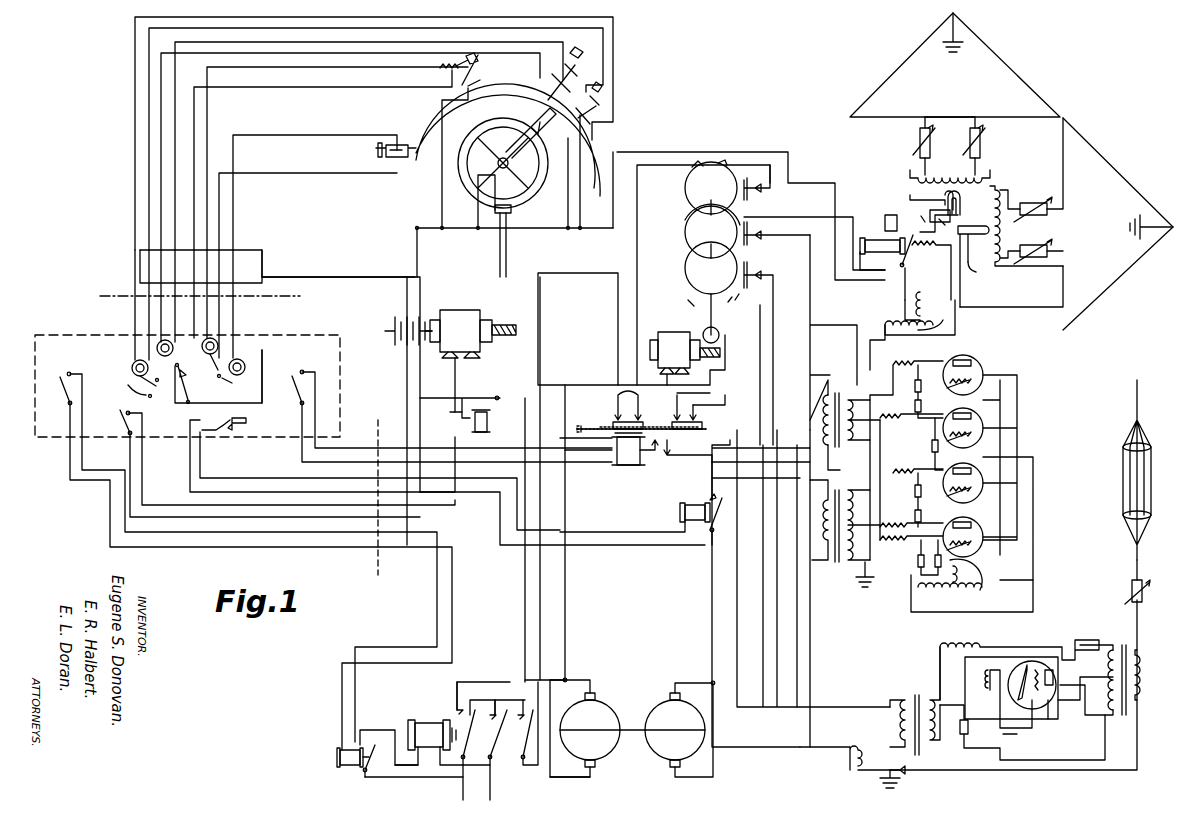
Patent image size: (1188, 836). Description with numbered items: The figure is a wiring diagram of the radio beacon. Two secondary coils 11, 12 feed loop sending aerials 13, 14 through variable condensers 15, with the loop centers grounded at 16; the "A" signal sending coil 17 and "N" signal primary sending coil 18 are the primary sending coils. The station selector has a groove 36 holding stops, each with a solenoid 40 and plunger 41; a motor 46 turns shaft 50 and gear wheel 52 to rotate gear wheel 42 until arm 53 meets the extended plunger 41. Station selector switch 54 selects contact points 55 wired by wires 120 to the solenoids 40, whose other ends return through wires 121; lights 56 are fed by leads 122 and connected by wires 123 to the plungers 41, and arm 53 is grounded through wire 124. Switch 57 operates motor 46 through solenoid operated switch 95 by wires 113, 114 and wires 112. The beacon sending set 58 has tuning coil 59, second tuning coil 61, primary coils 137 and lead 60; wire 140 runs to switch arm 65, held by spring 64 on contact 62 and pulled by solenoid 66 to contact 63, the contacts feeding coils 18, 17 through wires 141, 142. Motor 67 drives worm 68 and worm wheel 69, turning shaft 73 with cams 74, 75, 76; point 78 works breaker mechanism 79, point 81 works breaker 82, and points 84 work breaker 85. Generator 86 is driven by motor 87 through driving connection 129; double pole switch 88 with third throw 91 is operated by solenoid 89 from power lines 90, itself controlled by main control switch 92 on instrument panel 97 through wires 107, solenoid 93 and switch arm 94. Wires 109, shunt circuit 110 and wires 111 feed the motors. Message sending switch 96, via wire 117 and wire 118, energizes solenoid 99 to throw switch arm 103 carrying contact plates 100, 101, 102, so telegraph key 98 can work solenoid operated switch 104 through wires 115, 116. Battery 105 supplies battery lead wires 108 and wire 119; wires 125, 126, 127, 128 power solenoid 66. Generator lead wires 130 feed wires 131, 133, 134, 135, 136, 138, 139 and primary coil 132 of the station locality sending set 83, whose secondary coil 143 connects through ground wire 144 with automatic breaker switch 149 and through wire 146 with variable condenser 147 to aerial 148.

The secondary coil 11 is at (956, 175).
The secondary coil 12 is at (1001, 230).
The loop sending aerial 13 is at (998, 64).
The loop sending aerial 14 is at (1122, 236).
The variable condenser 15 is at (928, 118).
The ground 16 is at (954, 62).
The "A" signal sending coil 17 is at (930, 199).
The "N" signal primary sending coil 18 is at (973, 266).
The T section groove 36 is at (600, 136).
The solenoid 40 is at (407, 146).
The plunger 41 is at (548, 100).
The gear wheel 42 is at (540, 192).
The motor 46 is at (468, 354).
The shaft 50 is at (508, 255).
The gear wheel 52 is at (512, 210).
The arm 53 is at (535, 133).
The station selector switch 54 is at (211, 383).
The contact points 55 is at (174, 378).
The station indicator light 56 is at (136, 362).
The switch 57 is at (118, 424).
The radio sending set 58 is at (1020, 418).
The tuning coil 59 is at (962, 612).
The lead 60 is at (974, 276).
The second tuning coil 61 is at (920, 318).
The switch contact 62 is at (964, 203).
The switch contact 63 is at (892, 215).
The spring 64 is at (931, 270).
The switch arm 65 is at (918, 265).
The solenoid 66 is at (870, 240).
The motor 67 is at (675, 358).
The worm 68 is at (722, 354).
The worm wheel 69 is at (720, 336).
The shaft 73 is at (708, 320).
The cam 74 is at (711, 188).
The cam 75 is at (711, 232).
The cam wheel 76 is at (711, 268).
The point 78 is at (690, 176).
The breaker mechanism 79 is at (755, 185).
The point 81 is at (682, 226).
The breaker 82 is at (747, 243).
The sending set 83 is at (1011, 647).
The points 84 is at (688, 304).
The breaker 85 is at (738, 300).
The generator 86 is at (675, 730).
The motor 87 is at (590, 730).
The double pole switch 88 is at (472, 741).
The solenoid 89 is at (429, 742).
The power lines 90 is at (460, 792).
The third throw 91 is at (520, 745).
The main control switch 92 is at (210, 459).
The solenoid 93 is at (349, 769).
The switch arm 94 is at (389, 753).
The solenoid operated switch 95 is at (488, 418).
The message sending switch 96 is at (325, 416).
The instrument panel 97 is at (66, 335).
The telegraph key 98 is at (222, 440).
The solenoid 99 is at (628, 449).
The contact plate 100 is at (634, 412).
The contact plate 101 is at (688, 421).
The contact plate 102 is at (638, 461).
The switch arm 103 is at (590, 428).
The solenoid operated switch 104 is at (684, 500).
The battery 105 is at (406, 333).
The wires 107 is at (460, 612).
The battery lead wires 108 is at (330, 277).
The wires 109 is at (480, 682).
The shunt circuit 110 is at (542, 385).
The wires 111 is at (586, 385).
The wires 112 is at (488, 374).
The wire 113 is at (148, 455).
The wire 114 is at (470, 438).
The wire 115 is at (632, 518).
The wire 116 is at (286, 478).
The wire 117 is at (348, 448).
The wire 118 is at (300, 443).
The wire 119 is at (262, 365).
The wire 120 is at (322, 67).
The wires 121 is at (442, 112).
The leads 122 is at (246, 280).
The wires 123 is at (135, 168).
The wire 124 is at (478, 218).
The wire 125 is at (578, 273).
The wire 126 is at (640, 245).
The wire 127 is at (790, 212).
The wire 128 is at (597, 228).
The driving connection 129 is at (632, 712).
The lead wires 130 is at (688, 683).
The wires 131 is at (770, 707).
The primary coil 132 is at (898, 722).
The wires 133 is at (758, 582).
The wire 134 is at (716, 396).
The wire 135 is at (712, 445).
The wire 136 is at (812, 338).
The primary coils 137 is at (826, 490).
The wire 138 is at (820, 395).
The wire 139 is at (744, 624).
The wire 140 is at (892, 296).
The wire 141 is at (985, 269).
The wire 142 is at (938, 214).
The secondary coil 143 is at (1134, 668).
The ground wire 144 is at (1138, 722).
The wire 146 is at (1138, 567).
The variable condenser 147 is at (1128, 598).
The aerial 148 is at (1122, 526).
The automatic breaker switch 149 is at (880, 776).